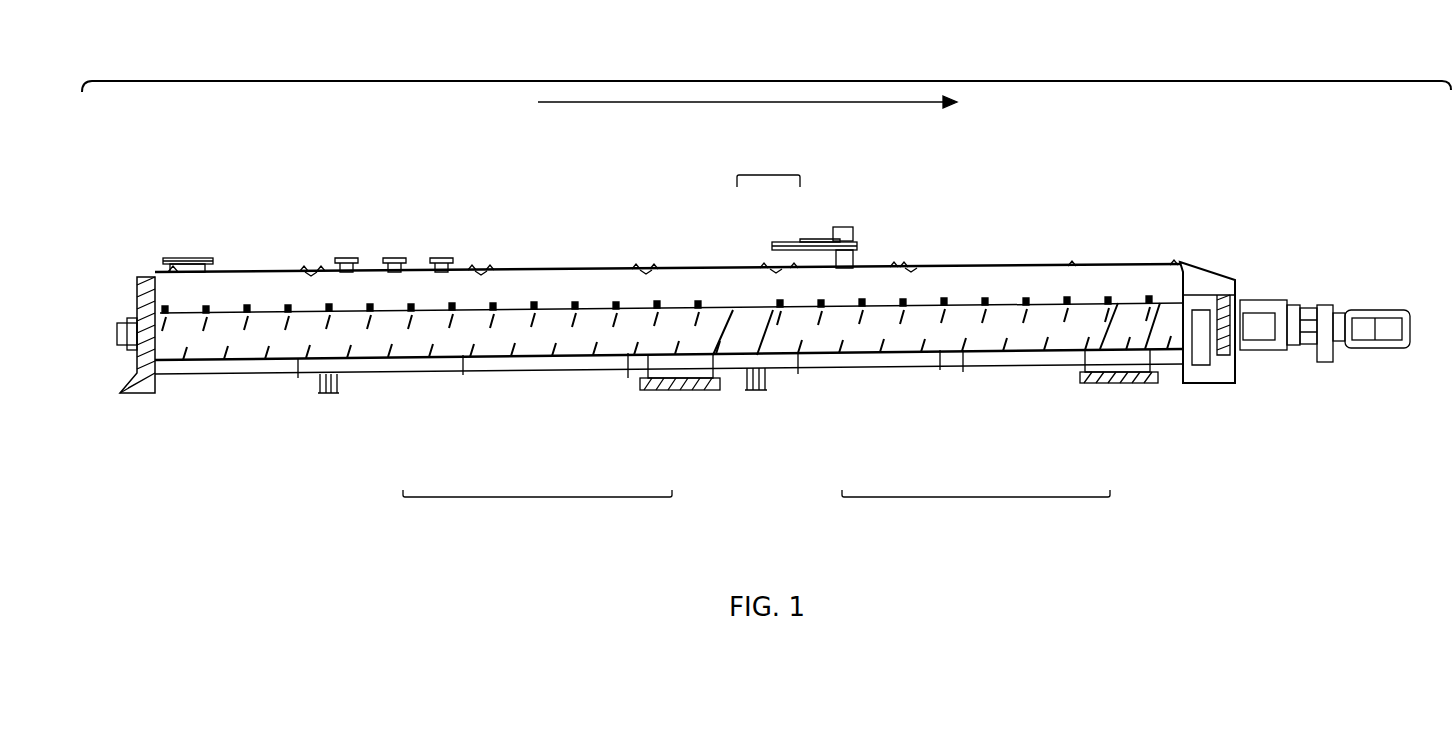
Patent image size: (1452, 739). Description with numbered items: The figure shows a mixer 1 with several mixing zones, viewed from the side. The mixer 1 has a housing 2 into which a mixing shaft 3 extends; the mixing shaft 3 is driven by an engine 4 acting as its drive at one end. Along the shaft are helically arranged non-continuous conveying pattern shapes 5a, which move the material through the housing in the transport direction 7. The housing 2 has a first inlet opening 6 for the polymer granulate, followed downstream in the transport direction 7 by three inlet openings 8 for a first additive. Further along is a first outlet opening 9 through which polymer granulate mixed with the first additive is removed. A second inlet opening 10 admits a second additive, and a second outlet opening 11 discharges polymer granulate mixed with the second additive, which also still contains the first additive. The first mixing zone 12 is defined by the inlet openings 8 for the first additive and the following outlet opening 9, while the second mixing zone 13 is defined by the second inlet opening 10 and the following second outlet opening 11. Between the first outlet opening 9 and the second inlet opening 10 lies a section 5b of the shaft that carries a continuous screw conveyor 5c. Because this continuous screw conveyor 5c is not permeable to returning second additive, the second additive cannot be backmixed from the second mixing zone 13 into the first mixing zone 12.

The mixer 1 is at (767, 81).
The housing 2 is at (250, 272).
The mixing shaft 3 is at (536, 343).
The engine 4 is at (1363, 350).
The non-continuous conveying pattern shapes 5a is at (527, 312).
The section including continuous screw conveyor 5b is at (770, 177).
The continuous screw conveyor 5c is at (737, 312).
The first inlet opening for polymer granulate 6 is at (189, 260).
The transport direction 7 is at (920, 104).
The inlet openings for first additive 8 is at (354, 257).
The first outlet opening for polymer granulate 9 is at (681, 392).
The second inlet opening for second additive 10 is at (842, 228).
The second outlet opening for polymer granulate 11 is at (1123, 385).
The first mixing zone 12 is at (538, 497).
The second mixing zone 13 is at (975, 497).